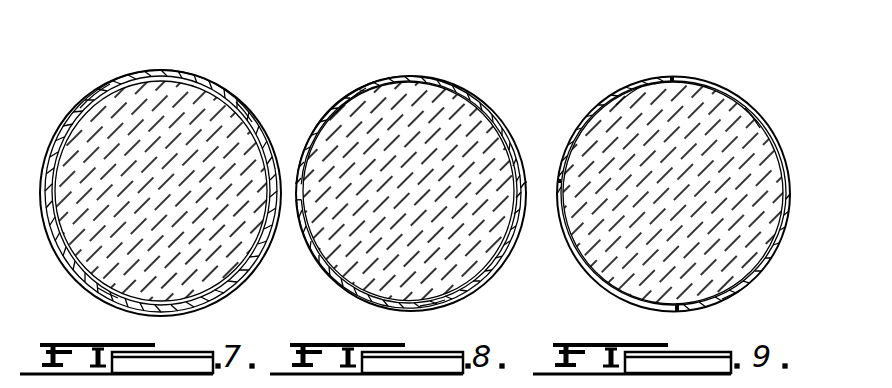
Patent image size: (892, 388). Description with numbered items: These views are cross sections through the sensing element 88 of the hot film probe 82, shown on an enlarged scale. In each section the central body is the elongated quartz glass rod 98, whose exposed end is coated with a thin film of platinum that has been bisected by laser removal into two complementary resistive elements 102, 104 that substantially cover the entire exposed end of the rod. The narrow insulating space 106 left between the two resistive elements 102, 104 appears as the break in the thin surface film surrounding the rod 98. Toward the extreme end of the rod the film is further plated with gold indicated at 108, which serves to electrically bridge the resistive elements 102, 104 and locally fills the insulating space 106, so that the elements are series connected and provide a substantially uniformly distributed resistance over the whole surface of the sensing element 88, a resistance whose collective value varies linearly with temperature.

In FIG. 7, the hot film probe 82 is at (219, 78).
In FIG. 8, the hot film probe 82 is at (463, 77).
In FIG. 9, the hot film probe 82 is at (738, 82).
In FIG. 7, the sensing element 88 is at (93, 95).
In FIG. 8, the sensing element 88 is at (352, 90).
In FIG. 9, the sensing element 88 is at (631, 78).
In FIG. 7, the quartz glass rod 98 is at (192, 186).
In FIG. 8, the quartz glass rod 98 is at (444, 186).
In FIG. 9, the quartz glass rod 98 is at (704, 186).
In FIG. 7, the resistive element 102 is at (150, 75).
In FIG. 8, the resistive element 102 is at (402, 76).
In FIG. 9, the resistive element 102 is at (615, 84).
In FIG. 7, the resistive element 104 is at (108, 303).
In FIG. 8, the resistive element 104 is at (433, 308).
In FIG. 9, the resistive element 104 is at (766, 93).
In FIG. 8, the insulating space 106 is at (527, 186).
In FIG. 9, the insulating space 106 is at (680, 76).
In FIG. 7, the gold bridge 108 is at (238, 103).